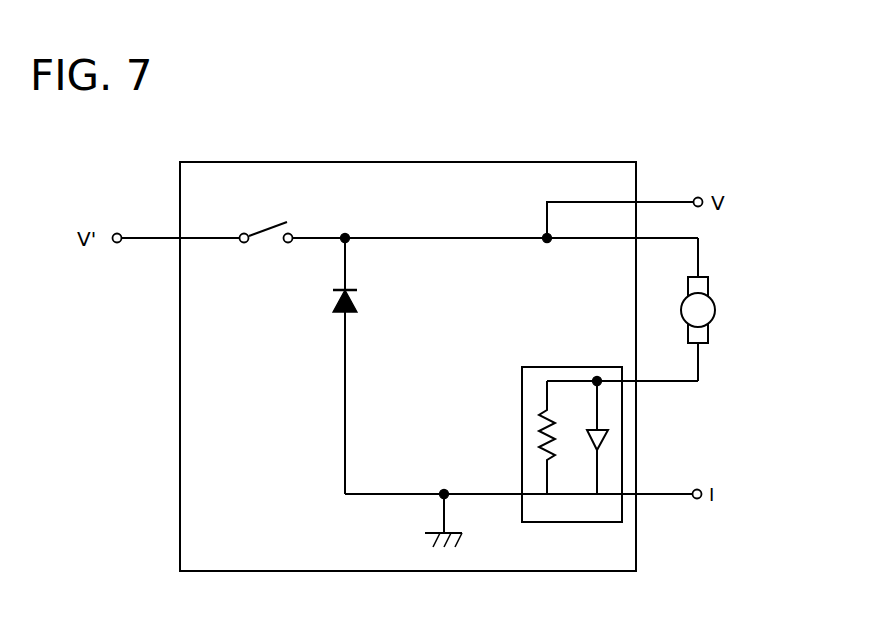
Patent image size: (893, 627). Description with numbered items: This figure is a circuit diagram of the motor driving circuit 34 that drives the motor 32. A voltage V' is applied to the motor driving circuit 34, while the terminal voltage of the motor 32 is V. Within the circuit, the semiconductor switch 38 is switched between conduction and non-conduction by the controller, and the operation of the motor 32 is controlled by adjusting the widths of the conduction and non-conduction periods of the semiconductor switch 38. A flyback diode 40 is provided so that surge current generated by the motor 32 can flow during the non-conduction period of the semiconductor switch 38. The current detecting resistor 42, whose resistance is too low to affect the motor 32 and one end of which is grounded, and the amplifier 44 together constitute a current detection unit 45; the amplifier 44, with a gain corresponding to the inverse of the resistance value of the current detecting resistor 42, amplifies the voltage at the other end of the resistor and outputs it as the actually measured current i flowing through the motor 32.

The motor 32 is at (715, 308).
The motor driving circuit 34 is at (510, 162).
The semiconductor switch 38 is at (258, 227).
The flyback diode 40 is at (352, 287).
The current detecting resistor 42 is at (540, 426).
The amplifier 44 is at (607, 440).
The current detection unit 45 is at (565, 367).